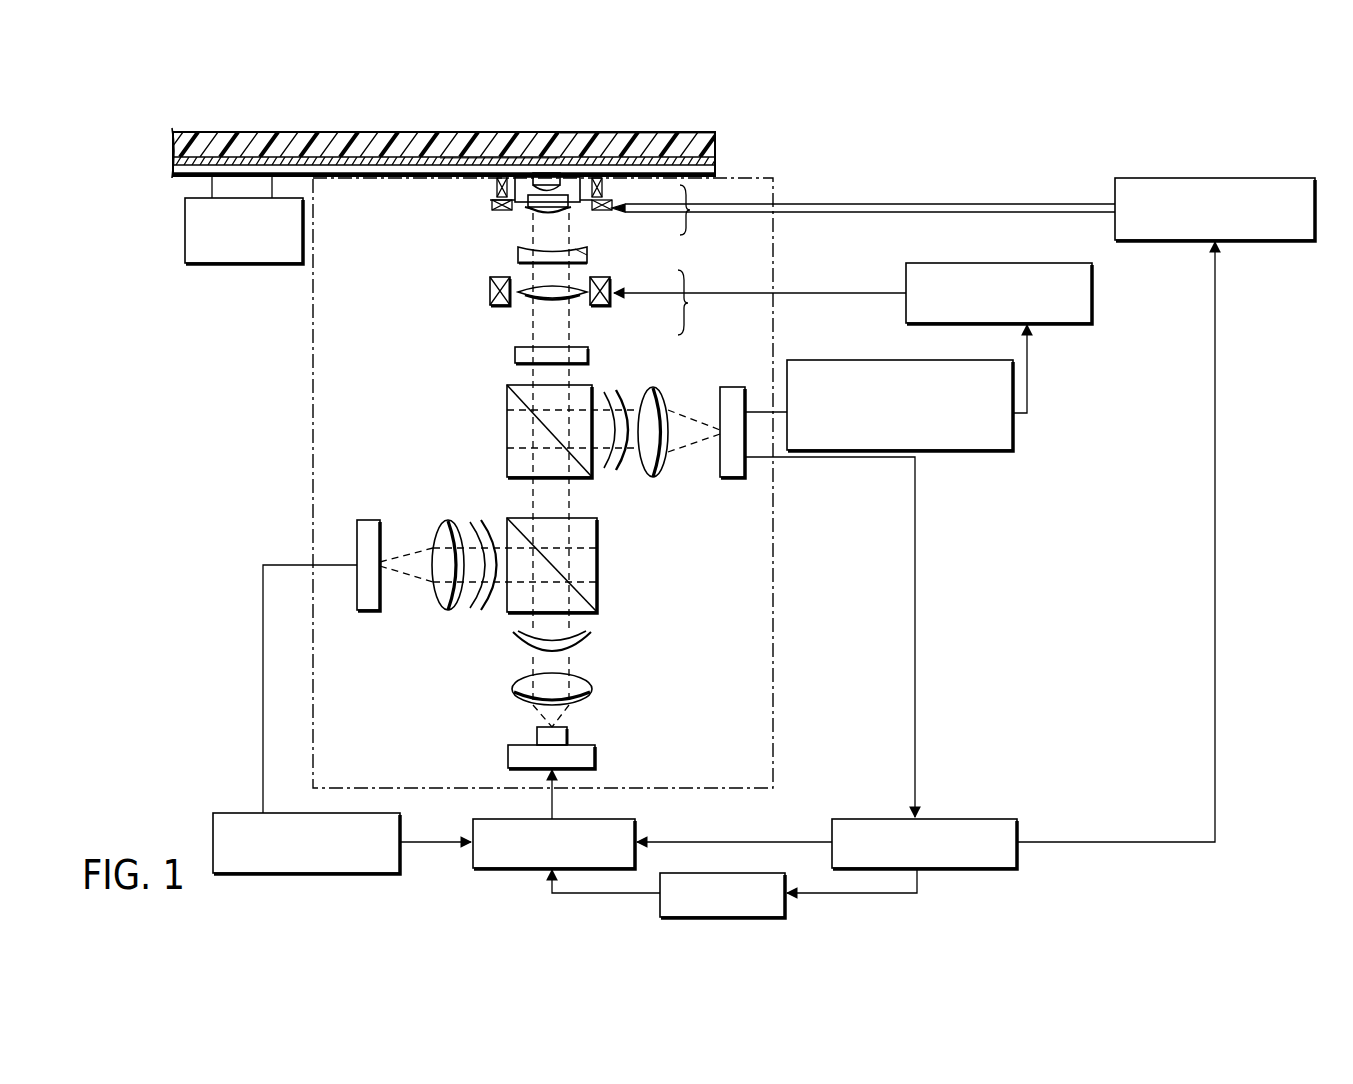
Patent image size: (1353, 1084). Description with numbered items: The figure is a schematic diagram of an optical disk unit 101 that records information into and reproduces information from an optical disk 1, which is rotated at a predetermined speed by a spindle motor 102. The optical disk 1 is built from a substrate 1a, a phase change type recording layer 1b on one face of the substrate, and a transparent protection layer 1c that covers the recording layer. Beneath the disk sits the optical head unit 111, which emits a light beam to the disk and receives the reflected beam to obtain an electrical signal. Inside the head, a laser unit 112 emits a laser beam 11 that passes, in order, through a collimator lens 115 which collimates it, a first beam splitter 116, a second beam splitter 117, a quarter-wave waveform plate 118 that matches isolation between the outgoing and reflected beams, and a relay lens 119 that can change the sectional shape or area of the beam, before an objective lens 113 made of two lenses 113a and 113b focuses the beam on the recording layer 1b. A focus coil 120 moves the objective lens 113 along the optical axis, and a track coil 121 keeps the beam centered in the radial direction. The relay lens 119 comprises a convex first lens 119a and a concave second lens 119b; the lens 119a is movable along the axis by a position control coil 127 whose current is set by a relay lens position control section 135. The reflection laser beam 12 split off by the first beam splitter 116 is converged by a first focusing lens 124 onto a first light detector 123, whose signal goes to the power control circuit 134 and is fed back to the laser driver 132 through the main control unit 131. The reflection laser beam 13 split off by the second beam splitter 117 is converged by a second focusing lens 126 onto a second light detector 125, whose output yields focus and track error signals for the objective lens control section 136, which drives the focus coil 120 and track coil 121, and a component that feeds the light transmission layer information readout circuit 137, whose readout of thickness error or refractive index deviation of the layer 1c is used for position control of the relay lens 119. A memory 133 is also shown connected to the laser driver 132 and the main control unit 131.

The optical disk 1 is at (358, 131).
The substrate 1a is at (588, 142).
The recording layer 1b is at (495, 140).
The transparent protection layer (light transmission layer) 1c is at (427, 181).
The optical disk unit 101 is at (928, 165).
The spindle motor 102 is at (258, 266).
The optical head unit 111 is at (775, 190).
The laser unit 112 is at (596, 757).
The objective lens 113 is at (692, 212).
The lens 113a is at (603, 191).
The lens 113b is at (575, 209).
The collimator lens 115 is at (593, 689).
The first beam splitter 116 is at (598, 575).
The second beam splitter 117 is at (506, 428).
The λ/4 waveform plate 118 is at (514, 355).
The relay lens 119 is at (693, 302).
The first lens 119a is at (588, 298).
The second lens 119b is at (588, 262).
The focus coil 120 is at (497, 190).
The track coil 121 is at (498, 215).
The first light detector 123 is at (368, 612).
The first focusing lens 124 is at (450, 612).
The second light detector 125 is at (735, 479).
The second focusing lens 126 is at (653, 479).
The position control coil 127 is at (488, 291).
The laser beam 11 is at (592, 637).
The reflection laser beam 12 is at (473, 525).
The reflection laser beam 13 is at (611, 472).
The main control unit 131 is at (960, 819).
The laser driver 132 is at (637, 822).
The memory 133 is at (726, 873).
The power control circuit 134 is at (403, 824).
The relay lens position control section 135 is at (1094, 290).
The objective lens control section 136 is at (1190, 178).
The light transmission layer information readout circuit 137 is at (848, 360).